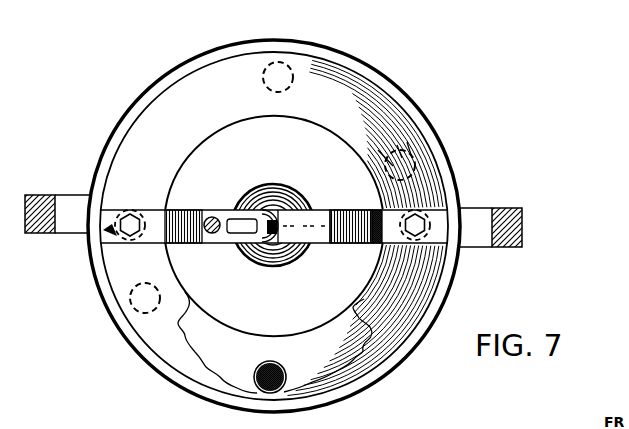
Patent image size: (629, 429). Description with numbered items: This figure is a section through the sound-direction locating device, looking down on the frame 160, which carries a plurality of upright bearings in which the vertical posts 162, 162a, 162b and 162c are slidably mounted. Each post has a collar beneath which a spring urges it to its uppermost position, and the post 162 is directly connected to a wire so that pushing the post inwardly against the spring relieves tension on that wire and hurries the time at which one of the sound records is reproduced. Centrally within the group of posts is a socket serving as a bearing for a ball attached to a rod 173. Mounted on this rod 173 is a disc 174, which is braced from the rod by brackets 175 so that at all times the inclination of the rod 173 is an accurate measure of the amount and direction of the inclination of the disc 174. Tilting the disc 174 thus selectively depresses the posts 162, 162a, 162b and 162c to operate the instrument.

The frame 160 is at (522, 228).
The vertical post 162 is at (160, 294).
The vertical post 162a is at (274, 362).
The vertical post 162b is at (290, 88).
The vertical post 162c is at (412, 172).
The rod 173 is at (231, 246).
The disc 174 is at (423, 157).
The brackets 175 is at (353, 246).